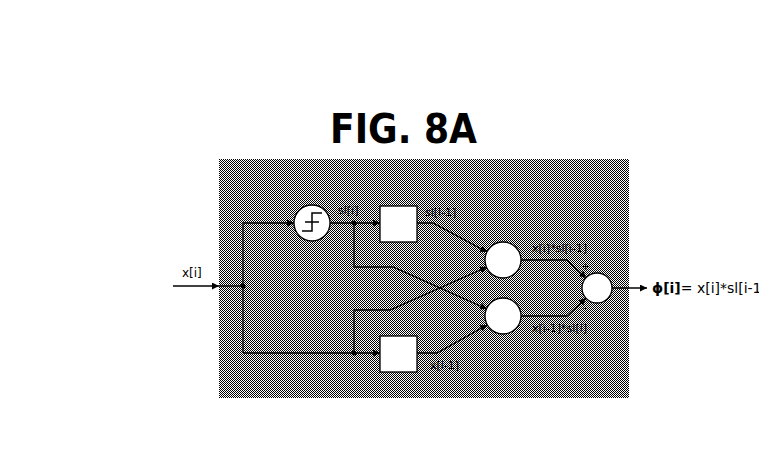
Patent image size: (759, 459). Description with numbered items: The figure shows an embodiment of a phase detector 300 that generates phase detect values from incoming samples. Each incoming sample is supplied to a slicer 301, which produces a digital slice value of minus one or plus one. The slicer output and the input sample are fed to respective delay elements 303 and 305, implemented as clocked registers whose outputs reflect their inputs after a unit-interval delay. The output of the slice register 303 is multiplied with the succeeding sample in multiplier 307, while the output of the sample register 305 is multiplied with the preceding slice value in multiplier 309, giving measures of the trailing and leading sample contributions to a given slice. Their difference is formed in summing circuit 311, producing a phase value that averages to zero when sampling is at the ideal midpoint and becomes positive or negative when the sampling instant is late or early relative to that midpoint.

The phase detector 300 is at (412, 188).
The slicer 301 is at (300, 236).
The delay element (slice register) 303 is at (414, 233).
The delay element (sample register) 305 is at (414, 343).
The multiplier 307 is at (512, 245).
The multiplier 309 is at (514, 331).
The summing circuit 311 is at (600, 303).